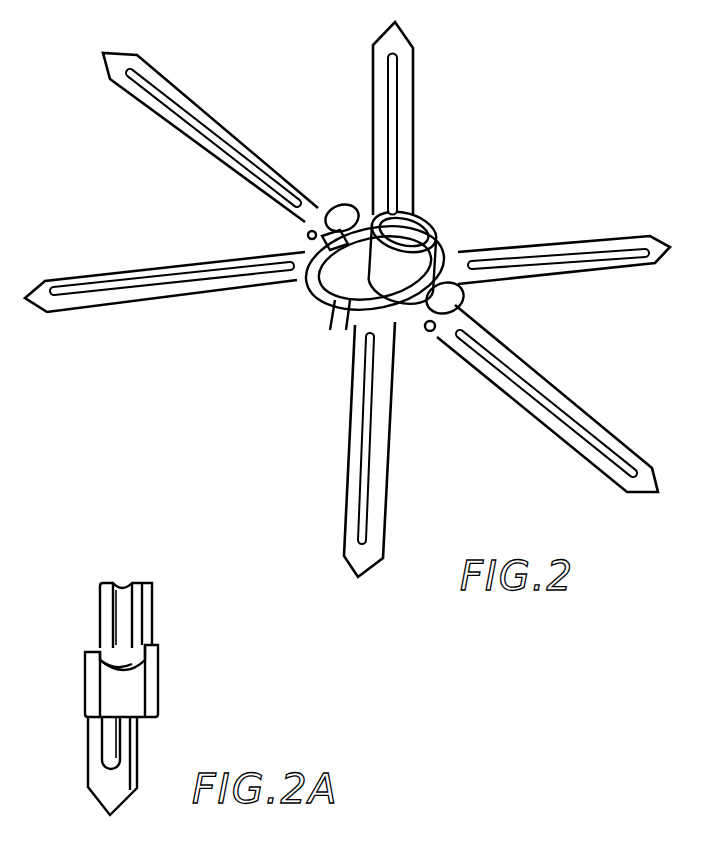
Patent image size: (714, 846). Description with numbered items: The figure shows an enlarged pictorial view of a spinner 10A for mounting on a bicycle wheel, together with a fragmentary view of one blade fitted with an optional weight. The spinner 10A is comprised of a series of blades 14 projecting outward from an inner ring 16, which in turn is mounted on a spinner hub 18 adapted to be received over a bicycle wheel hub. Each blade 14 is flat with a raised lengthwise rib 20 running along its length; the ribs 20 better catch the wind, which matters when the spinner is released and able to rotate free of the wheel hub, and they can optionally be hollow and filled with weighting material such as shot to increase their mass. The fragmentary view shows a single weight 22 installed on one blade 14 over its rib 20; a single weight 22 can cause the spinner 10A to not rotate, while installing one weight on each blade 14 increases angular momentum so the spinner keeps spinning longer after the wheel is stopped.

In FIG. 2, the spinner 10A is at (168, 393).
In FIG. 2A, the blade 14 is at (96, 614).
In FIG. 2, the inner ring 16 is at (330, 298).
In FIG. 2, the spinner hub 18 is at (410, 221).
In FIG. 2A, the rib 20 is at (120, 632).
In FIG. 2A, the weight 22 is at (157, 688).